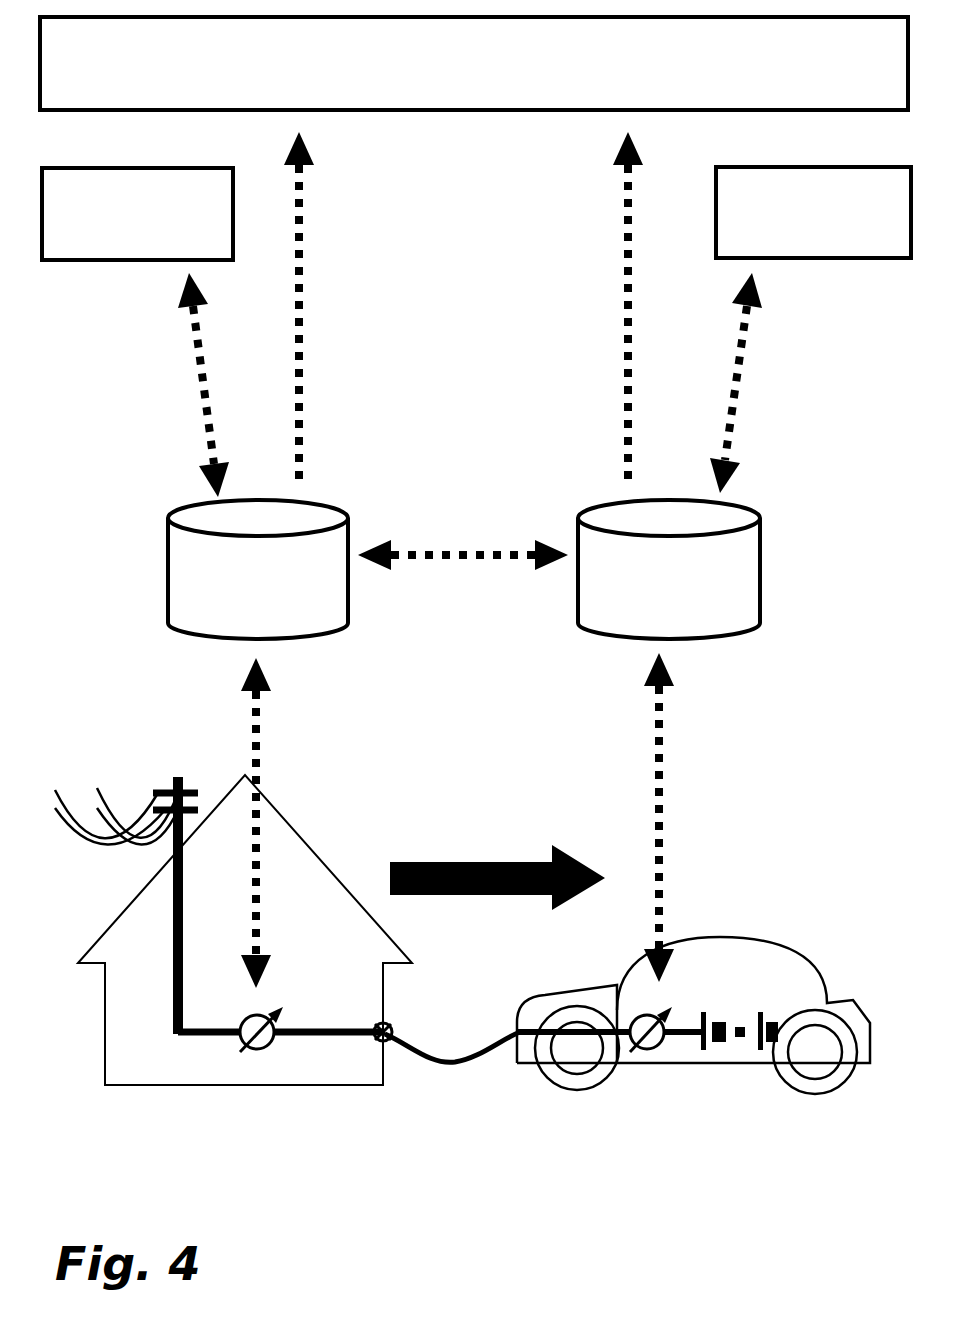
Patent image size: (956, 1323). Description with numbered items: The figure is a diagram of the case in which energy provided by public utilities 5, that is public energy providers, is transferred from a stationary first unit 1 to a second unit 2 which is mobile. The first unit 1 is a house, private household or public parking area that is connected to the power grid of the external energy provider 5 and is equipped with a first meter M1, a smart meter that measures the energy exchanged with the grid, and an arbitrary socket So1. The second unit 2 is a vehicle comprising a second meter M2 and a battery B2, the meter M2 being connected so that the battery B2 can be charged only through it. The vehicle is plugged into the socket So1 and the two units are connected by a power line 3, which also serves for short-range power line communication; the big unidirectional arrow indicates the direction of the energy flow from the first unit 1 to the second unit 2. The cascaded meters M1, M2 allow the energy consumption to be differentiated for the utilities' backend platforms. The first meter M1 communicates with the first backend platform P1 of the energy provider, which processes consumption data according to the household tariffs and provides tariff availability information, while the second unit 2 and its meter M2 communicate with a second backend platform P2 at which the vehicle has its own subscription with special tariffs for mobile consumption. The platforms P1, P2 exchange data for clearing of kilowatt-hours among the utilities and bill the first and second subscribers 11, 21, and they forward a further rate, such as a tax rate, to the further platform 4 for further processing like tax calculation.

The further platform 4 is at (474, 63).
The first subscriber 11 is at (137, 214).
The second subscriber 21 is at (813, 212).
The first backend platform P1 is at (258, 569).
The second backend platform P2 is at (669, 569).
The first unit 1 is at (300, 812).
The external power energy provider 5 is at (128, 795).
The socket So1 is at (397, 1040).
The power line 3 is at (455, 1062).
The first meter M1 is at (260, 1050).
The second unit 2 is at (760, 933).
The second meter M2 is at (647, 1050).
The battery B2 is at (742, 1050).